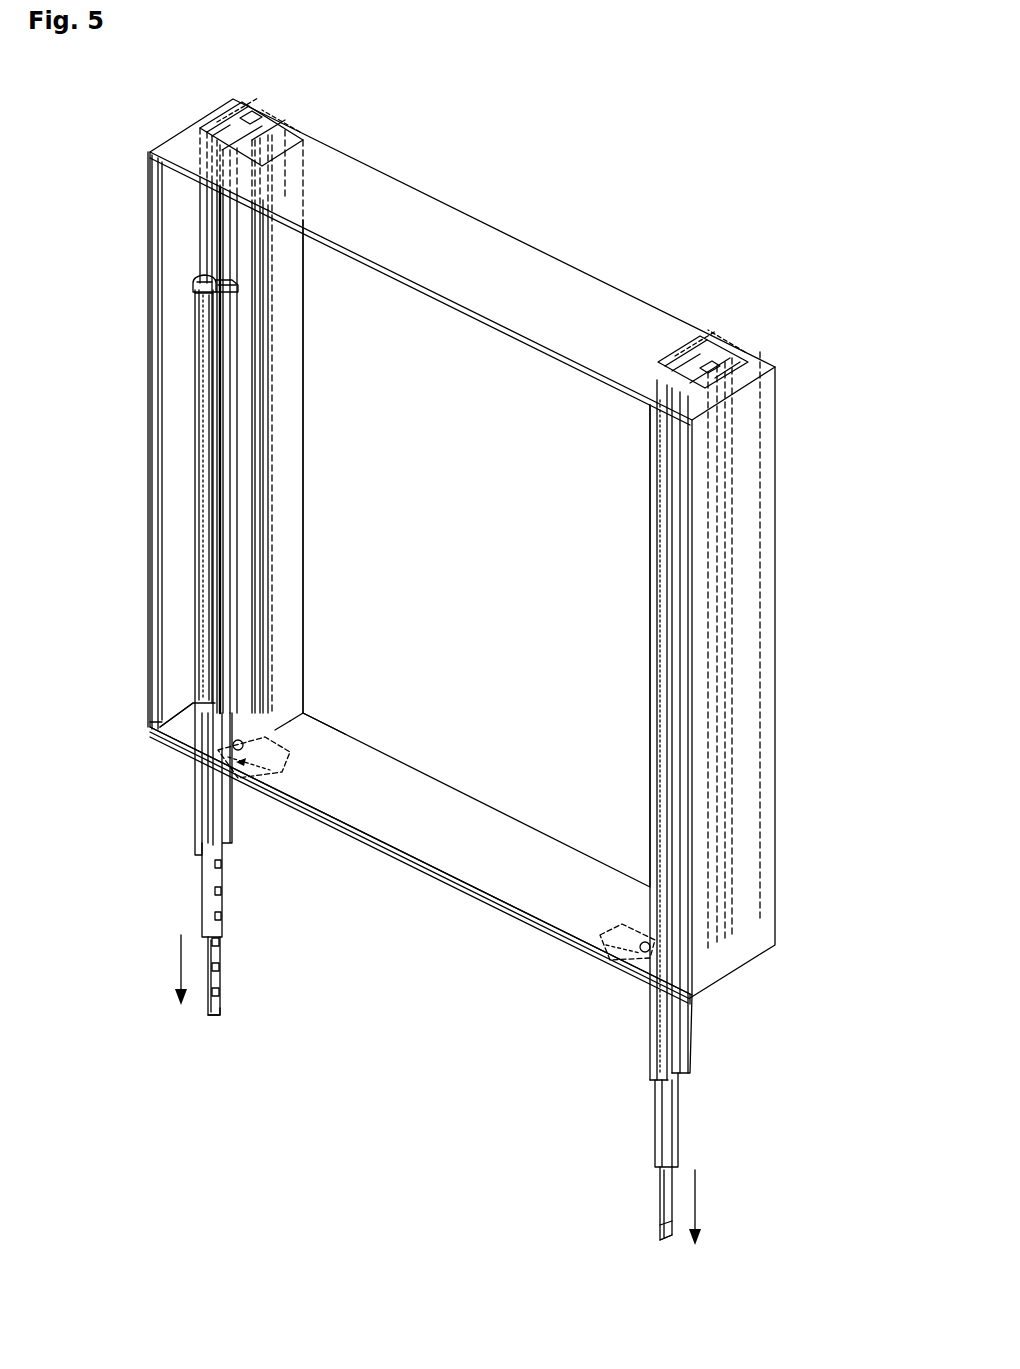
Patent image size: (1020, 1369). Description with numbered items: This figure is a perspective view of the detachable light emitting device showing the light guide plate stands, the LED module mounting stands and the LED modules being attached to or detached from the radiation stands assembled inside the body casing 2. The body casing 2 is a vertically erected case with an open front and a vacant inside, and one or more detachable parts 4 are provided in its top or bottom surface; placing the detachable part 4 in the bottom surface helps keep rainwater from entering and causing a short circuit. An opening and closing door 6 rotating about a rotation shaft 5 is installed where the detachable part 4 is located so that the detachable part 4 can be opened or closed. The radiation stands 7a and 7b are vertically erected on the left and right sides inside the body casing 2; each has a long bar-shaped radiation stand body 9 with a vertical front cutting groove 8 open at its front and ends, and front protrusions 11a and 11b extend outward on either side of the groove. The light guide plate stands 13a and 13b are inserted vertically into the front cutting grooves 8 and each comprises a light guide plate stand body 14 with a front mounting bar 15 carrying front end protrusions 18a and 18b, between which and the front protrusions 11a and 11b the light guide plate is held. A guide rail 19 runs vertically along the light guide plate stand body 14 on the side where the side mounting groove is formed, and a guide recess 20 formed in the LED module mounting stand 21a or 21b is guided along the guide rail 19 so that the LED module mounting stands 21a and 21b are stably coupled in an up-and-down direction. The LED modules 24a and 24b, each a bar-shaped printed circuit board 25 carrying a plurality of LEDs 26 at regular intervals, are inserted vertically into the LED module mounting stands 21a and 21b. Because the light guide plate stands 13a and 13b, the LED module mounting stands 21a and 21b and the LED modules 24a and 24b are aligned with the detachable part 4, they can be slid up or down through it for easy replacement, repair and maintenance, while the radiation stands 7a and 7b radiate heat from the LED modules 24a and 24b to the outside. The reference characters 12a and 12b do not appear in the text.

The body casing 2 is at (490, 247).
The detachable part 4 is at (168, 735).
The rotation shaft 5 is at (222, 742).
The opening and closing door 6 is at (276, 748).
The radiation stand 7a is at (252, 118).
The radiation stand 7b is at (710, 352).
The front cutting groove 8 is at (178, 156).
The radiation stand body 9 is at (297, 115).
The front protrusion 11a is at (200, 157).
The front protrusion 11b is at (228, 215).
The first guide groove 12a is at (222, 112).
The second guide groove 12b is at (303, 167).
The light guide plate stand 13a is at (185, 370).
The light guide plate stand 13b is at (695, 1042).
The light guide plate stand body 14 is at (207, 282).
The front mounting bar 15 is at (200, 407).
The front end protrusion 18a is at (187, 267).
The front end protrusion 18b is at (215, 418).
The guide rail 19 is at (223, 283).
The guide recess 20 is at (673, 1163).
The LED module mounting stand 21a is at (242, 876).
The LED module mounting stand 21b is at (685, 1127).
The LED module 24a is at (238, 997).
The LED module 24b is at (650, 1192).
The printed circuit board 25 is at (243, 996).
The LEDs 26 is at (217, 953).